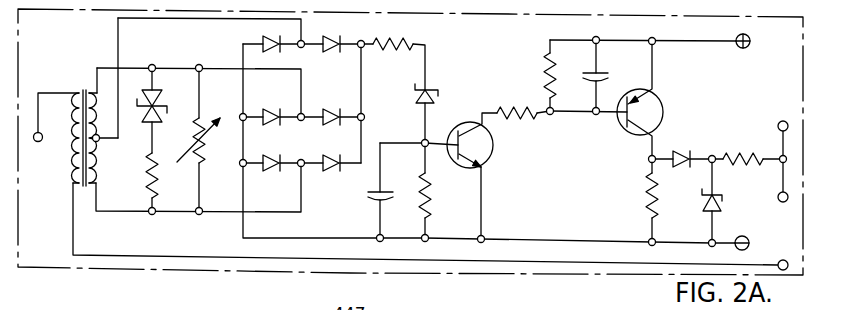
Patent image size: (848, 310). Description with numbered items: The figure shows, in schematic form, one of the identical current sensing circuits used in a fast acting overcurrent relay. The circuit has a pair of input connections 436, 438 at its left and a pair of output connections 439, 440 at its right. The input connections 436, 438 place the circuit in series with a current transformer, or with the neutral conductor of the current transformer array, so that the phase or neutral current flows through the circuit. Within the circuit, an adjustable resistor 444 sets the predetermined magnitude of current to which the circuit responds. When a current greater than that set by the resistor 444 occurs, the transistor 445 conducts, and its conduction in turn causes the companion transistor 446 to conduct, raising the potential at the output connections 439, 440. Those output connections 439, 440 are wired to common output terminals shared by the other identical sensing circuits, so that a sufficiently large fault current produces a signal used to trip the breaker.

The input connection 436 is at (783, 260).
The input connection 438 is at (42, 140).
The output connection 439 is at (787, 119).
The output connection 440 is at (763, 185).
The resistor 444 is at (204, 139).
The transistor 445 is at (516, 141).
The transistor 446 is at (664, 112).